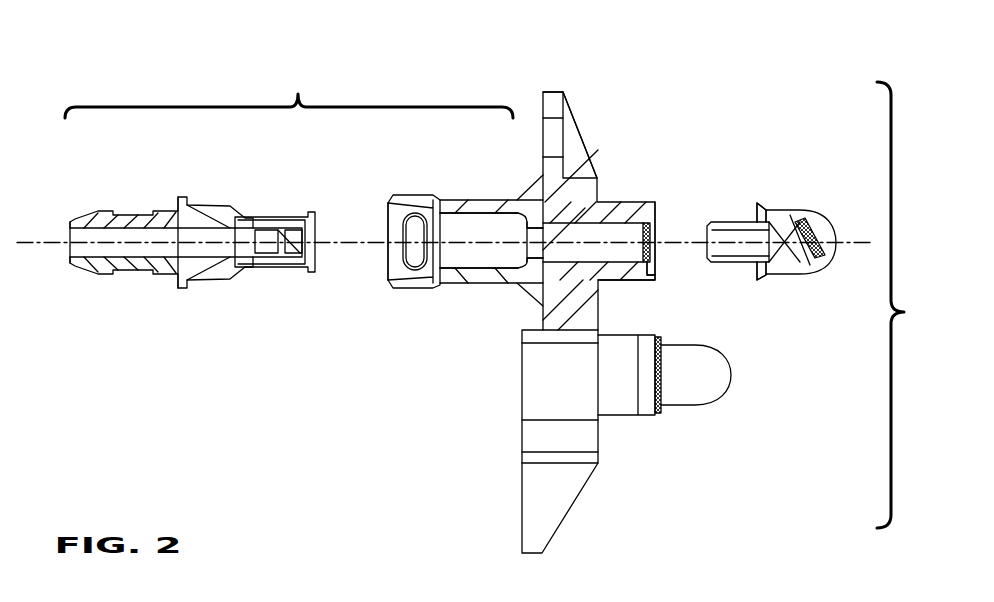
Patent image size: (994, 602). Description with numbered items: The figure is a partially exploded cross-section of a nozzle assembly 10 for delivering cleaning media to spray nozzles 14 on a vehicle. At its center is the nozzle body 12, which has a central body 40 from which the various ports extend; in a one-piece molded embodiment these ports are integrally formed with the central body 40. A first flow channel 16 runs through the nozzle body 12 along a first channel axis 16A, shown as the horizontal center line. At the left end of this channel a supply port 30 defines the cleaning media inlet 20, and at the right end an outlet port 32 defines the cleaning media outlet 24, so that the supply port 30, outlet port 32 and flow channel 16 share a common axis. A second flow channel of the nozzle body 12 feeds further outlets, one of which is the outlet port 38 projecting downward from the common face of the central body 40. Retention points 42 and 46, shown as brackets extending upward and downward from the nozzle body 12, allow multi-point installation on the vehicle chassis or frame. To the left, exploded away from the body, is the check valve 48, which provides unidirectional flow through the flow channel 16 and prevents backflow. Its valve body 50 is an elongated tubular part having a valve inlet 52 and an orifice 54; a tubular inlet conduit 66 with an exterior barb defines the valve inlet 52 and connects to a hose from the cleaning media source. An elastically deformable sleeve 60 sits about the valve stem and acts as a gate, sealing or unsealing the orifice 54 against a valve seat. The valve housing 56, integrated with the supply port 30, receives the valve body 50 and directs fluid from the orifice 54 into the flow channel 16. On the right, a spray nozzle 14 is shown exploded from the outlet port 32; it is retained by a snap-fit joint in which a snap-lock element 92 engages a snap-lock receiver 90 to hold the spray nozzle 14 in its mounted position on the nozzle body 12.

The nozzle assembly 10 is at (906, 305).
The nozzle body 12 is at (612, 194).
The spray nozzle 14 is at (828, 210).
The first flow channel 16 is at (562, 230).
The first channel axis 16A is at (488, 242).
The cleaning media inlet 20 is at (383, 262).
The cleaning media outlet 24 is at (660, 223).
The supply port 30 is at (480, 270).
The outlet port 32 is at (617, 285).
The outlet port 38 is at (617, 397).
The central body 40 is at (543, 302).
The retention point 42 is at (558, 120).
The retention point 46 is at (578, 495).
The check valve 48 is at (289, 91).
The valve body 50 is at (205, 278).
The valve inlet 52 is at (70, 246).
The orifice 54 is at (268, 248).
The valve housing 56 is at (408, 287).
The elastically deformable sleeve 60 is at (277, 216).
The tubular inlet conduit 66 is at (130, 270).
The snap-lock receiver 90 is at (657, 262).
The snap-lock element 92 is at (757, 222).